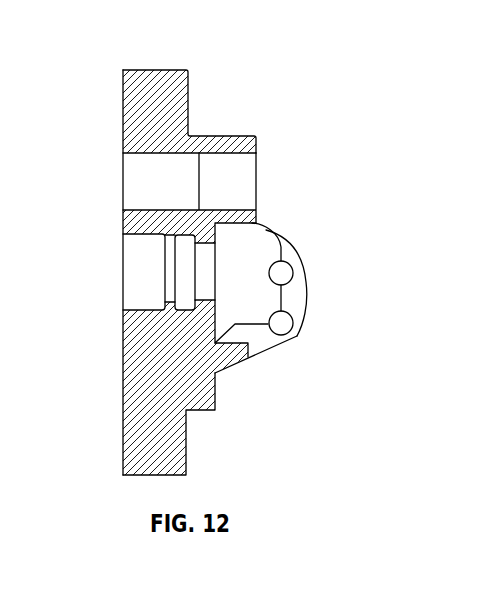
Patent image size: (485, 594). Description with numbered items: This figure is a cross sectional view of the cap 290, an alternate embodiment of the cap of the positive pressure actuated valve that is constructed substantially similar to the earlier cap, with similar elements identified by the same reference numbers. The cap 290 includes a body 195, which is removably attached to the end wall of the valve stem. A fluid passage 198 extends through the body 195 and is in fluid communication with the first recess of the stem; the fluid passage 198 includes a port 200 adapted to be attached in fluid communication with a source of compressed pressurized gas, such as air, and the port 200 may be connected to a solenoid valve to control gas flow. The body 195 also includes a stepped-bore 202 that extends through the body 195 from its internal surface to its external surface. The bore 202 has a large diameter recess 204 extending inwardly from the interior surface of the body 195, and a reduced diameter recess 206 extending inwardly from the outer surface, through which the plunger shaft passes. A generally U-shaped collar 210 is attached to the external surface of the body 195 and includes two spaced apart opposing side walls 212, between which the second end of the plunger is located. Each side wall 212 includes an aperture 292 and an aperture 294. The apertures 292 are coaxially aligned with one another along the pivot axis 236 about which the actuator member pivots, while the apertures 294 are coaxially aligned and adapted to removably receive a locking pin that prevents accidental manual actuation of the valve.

The cap 290 is at (92, 40).
The body 195 is at (188, 92).
The port 200 is at (256, 152).
The fluid passage 198 is at (242, 173).
The stepped-bore 202 is at (136, 255).
The large diameter recess 204 is at (132, 298).
The reduced diameter recess 206 is at (197, 247).
The collar 210 is at (308, 297).
The side walls 212 is at (308, 288).
The aperture 294 is at (293, 268).
The aperture 292 is at (296, 327).
The pivot axis 236 is at (281, 324).